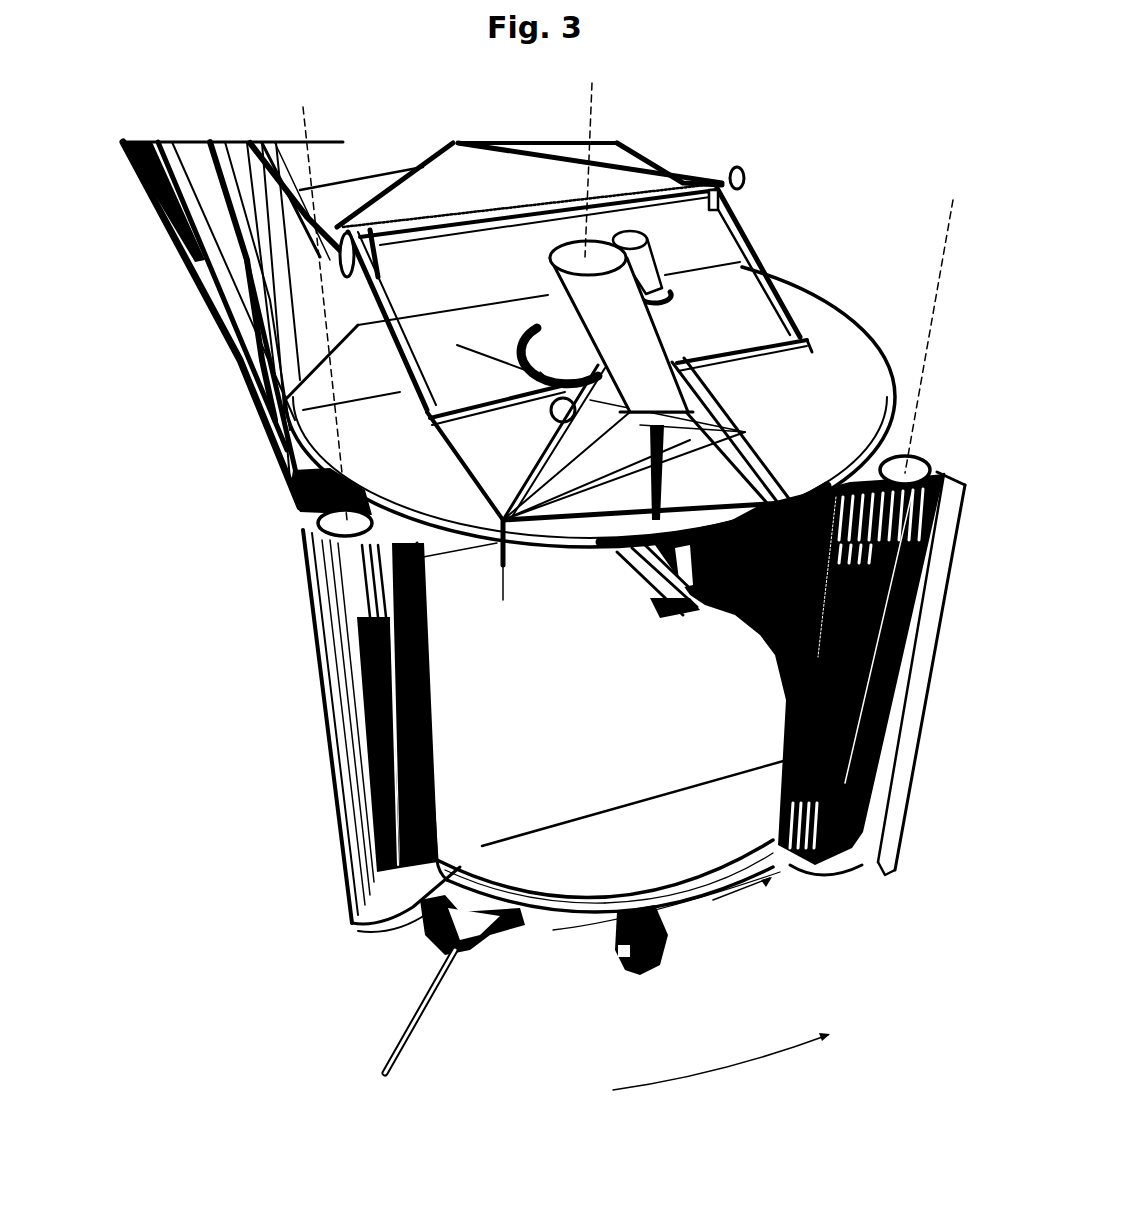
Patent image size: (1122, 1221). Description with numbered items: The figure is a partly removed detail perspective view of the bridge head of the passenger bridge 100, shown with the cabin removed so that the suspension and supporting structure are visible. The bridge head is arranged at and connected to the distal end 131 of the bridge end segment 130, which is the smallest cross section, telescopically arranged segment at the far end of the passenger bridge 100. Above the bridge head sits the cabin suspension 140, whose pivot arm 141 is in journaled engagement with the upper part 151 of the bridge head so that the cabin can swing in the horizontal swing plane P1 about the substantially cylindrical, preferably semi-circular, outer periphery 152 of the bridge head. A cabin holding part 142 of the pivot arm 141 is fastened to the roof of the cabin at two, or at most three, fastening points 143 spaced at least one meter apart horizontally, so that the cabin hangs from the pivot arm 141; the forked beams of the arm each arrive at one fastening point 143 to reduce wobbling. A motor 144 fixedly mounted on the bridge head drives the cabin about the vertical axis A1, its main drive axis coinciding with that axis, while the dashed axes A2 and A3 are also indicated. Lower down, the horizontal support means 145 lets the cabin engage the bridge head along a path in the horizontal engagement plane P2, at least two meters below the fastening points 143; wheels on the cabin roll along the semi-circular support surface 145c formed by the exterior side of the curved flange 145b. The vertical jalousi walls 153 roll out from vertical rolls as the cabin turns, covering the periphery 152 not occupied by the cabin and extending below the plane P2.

The passenger bridge 100 is at (607, 584).
The bridge end segment 130 is at (183, 272).
The distal end of the bridge end segment 131 is at (728, 167).
The cabin suspension 140 is at (750, 290).
The pivot arm 141 is at (619, 321).
The cabin holding part 142 is at (745, 442).
The fastening points 143 is at (742, 607).
The motor 144 is at (527, 370).
The horizontal support means 145 is at (720, 880).
The curved flange 145b is at (743, 877).
The semi-circular support surface 145c is at (525, 886).
The upper part of the bridge head 151 is at (512, 352).
The outer periphery of the bridge head 152 is at (845, 303).
The jalousi walls 153 is at (297, 505).
The vertical axis A1 is at (604, 168).
The axis A2 is at (325, 311).
The axis A3 is at (944, 336).
The horizontal swing plane P1 is at (734, 1061).
The horizontal engagement plane P2 is at (755, 889).